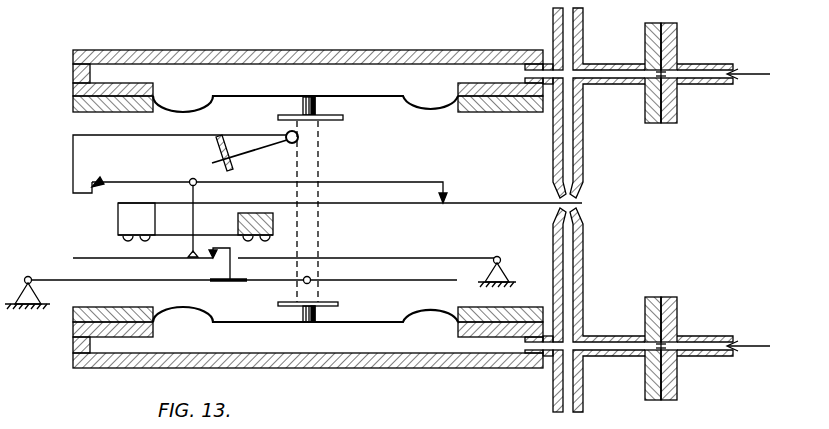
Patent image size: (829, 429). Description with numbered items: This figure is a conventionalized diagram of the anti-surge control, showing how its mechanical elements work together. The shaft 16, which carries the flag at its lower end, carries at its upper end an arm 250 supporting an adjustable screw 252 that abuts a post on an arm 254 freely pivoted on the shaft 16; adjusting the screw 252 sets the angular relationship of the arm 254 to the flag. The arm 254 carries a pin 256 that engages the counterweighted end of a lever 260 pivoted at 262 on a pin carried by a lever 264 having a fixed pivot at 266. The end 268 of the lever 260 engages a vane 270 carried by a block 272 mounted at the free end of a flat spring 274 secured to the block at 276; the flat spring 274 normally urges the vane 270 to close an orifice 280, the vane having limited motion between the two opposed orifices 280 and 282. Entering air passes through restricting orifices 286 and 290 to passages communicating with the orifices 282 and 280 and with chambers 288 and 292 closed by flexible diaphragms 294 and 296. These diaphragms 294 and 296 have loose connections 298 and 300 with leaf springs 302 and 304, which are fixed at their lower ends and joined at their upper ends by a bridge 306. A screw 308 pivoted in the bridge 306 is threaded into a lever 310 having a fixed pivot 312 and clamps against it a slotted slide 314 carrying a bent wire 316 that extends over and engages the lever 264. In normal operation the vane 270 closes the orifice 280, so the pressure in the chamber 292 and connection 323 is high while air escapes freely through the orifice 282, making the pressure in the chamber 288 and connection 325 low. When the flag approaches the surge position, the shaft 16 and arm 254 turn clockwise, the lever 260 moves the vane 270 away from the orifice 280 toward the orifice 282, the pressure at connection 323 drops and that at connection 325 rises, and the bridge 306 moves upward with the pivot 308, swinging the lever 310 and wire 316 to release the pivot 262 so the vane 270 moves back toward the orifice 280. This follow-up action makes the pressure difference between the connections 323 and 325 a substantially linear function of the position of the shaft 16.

The shaft 16 is at (299, 137).
The arm 250 is at (248, 153).
The adjustable screw 252 is at (215, 154).
The arm 254 is at (202, 134).
The pin 256 is at (114, 170).
The lever 260 is at (355, 170).
The pivot 262 is at (190, 181).
The lever 264 is at (393, 257).
The fixed pivot 266 is at (498, 257).
The end of lever 268 is at (447, 190).
The vane 270 is at (508, 201).
The block 272 is at (117, 219).
The flat spring 274 is at (238, 221).
The securing point 276 is at (280, 201).
The orifice 280 is at (582, 196).
The orifice 282 is at (582, 212).
The orifice 286 is at (670, 343).
The chamber 288 is at (317, 342).
The orifice 290 is at (668, 72).
The chamber 292 is at (309, 71).
The flexible diaphragm 294 is at (345, 323).
The flexible diaphragm 296 is at (343, 96).
The loose connection 298 is at (304, 315).
The loose connection 300 is at (302, 104).
The leaf spring 302 is at (272, 304).
The leaf spring 304 is at (344, 118).
The bridge 306 is at (319, 223).
The screw 308 is at (311, 278).
The lever 310 is at (375, 282).
The fixed pivot 312 is at (30, 276).
The slide 314 is at (210, 279).
The bent wire 316 is at (238, 270).
The connection 323 is at (566, 33).
The connection 325 is at (566, 389).